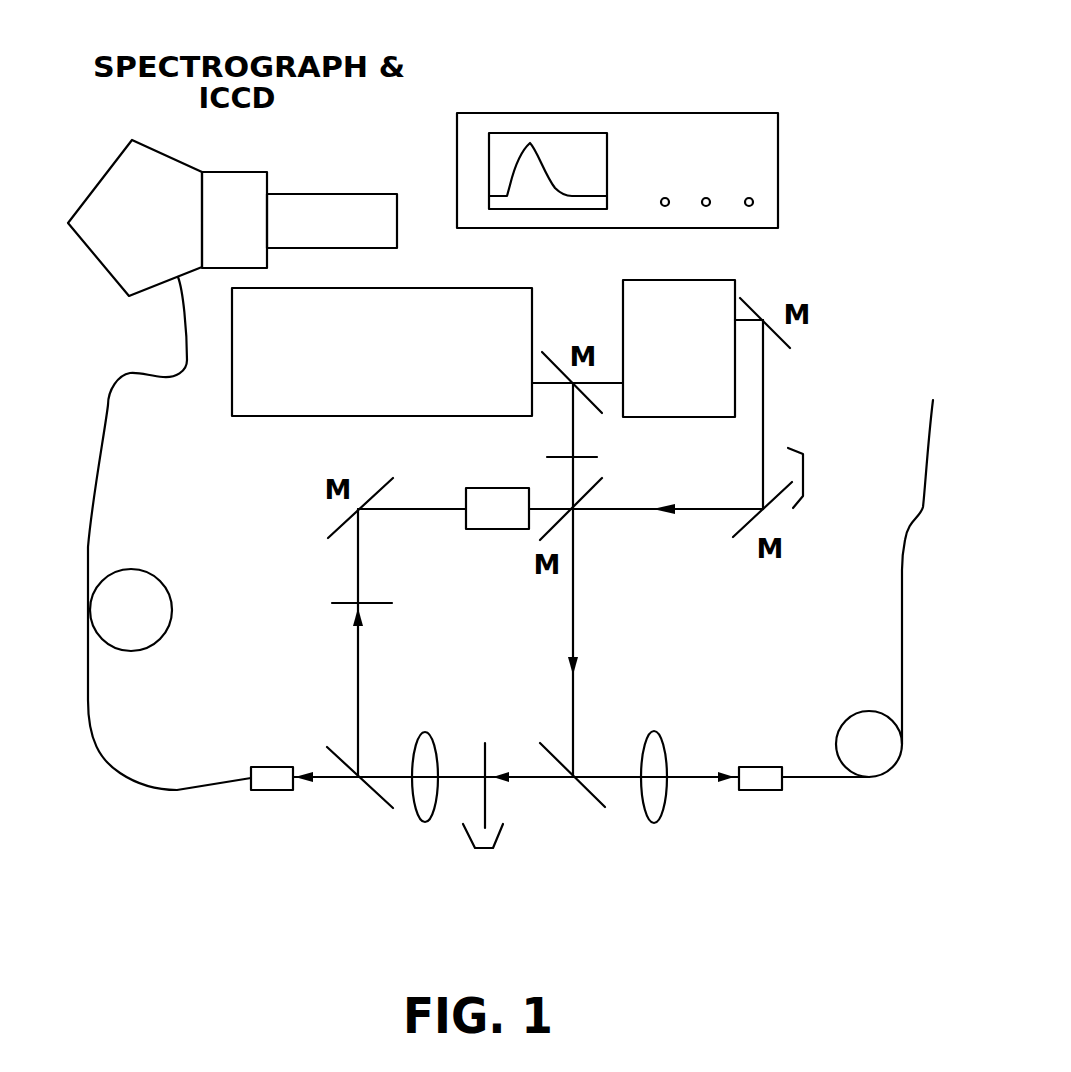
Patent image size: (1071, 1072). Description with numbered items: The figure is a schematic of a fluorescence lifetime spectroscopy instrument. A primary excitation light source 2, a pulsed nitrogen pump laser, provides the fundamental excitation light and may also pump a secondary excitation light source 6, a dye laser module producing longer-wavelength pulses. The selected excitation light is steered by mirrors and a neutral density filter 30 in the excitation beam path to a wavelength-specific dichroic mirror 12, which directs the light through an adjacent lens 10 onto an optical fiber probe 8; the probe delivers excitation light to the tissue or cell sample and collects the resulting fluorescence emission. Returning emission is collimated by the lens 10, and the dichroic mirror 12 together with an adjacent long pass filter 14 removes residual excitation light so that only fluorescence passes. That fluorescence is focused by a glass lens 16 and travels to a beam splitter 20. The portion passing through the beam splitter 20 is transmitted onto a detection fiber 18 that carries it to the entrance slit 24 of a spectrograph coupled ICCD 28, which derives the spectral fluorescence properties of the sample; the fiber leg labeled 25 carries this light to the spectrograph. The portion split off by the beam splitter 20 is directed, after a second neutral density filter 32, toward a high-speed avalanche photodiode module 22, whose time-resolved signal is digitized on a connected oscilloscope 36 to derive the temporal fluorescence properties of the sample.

The primary excitation light source 2 is at (393, 358).
The secondary excitation light source 6 is at (692, 358).
The optical fiber probe 8 is at (902, 607).
The lens 10 is at (653, 823).
The dichroic mirror 12 is at (583, 790).
The long pass filter 14 is at (482, 852).
The glass lens 16 is at (422, 822).
The detection fiber 18 is at (358, 673).
The beam splitter 20 is at (365, 792).
The high-speed avalanche photodiode module 22 is at (495, 531).
The entrance slit 24 is at (156, 230).
The optical fiber 25 is at (88, 548).
The spectrograph coupled ICCD 28 is at (214, 230).
The neutral density filter 30 is at (598, 458).
The neutral density filter 32 is at (805, 469).
The oscilloscope 36 is at (777, 162).